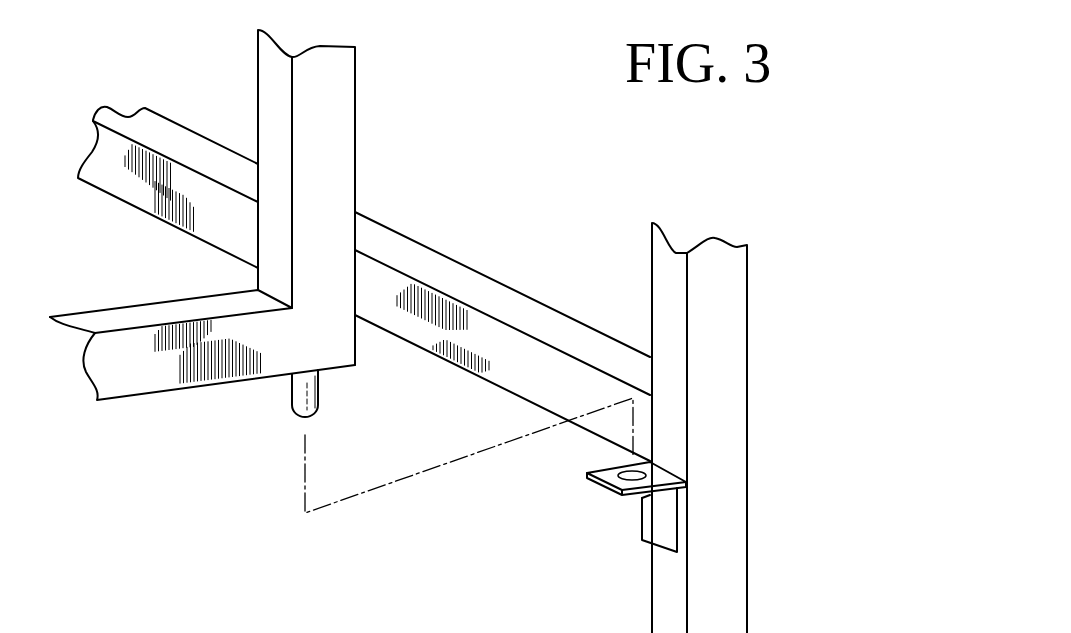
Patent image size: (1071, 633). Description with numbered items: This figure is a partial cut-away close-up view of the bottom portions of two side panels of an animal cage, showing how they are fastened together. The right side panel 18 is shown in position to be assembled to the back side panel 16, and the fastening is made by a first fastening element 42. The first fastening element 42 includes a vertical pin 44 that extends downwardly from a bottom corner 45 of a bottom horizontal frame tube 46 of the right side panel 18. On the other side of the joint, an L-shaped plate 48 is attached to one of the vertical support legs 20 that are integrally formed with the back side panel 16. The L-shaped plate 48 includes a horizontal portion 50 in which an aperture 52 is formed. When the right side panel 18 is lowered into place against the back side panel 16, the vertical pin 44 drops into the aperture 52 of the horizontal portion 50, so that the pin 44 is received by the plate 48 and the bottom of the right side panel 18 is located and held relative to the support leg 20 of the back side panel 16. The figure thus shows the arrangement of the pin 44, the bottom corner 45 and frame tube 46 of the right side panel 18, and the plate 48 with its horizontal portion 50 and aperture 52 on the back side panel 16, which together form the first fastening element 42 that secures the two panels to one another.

The back side panel 16 is at (713, 381).
The right side panel 18 is at (133, 368).
The support leg 20 is at (718, 566).
The first fastening element 42 is at (760, 428).
The vertical pin 44 is at (300, 398).
The bottom corner 45 is at (358, 367).
The bottom horizontal frame tube 46 is at (210, 383).
The L-shaped plate 48 is at (657, 525).
The horizontal portion 50 is at (600, 492).
The aperture 52 is at (587, 468).